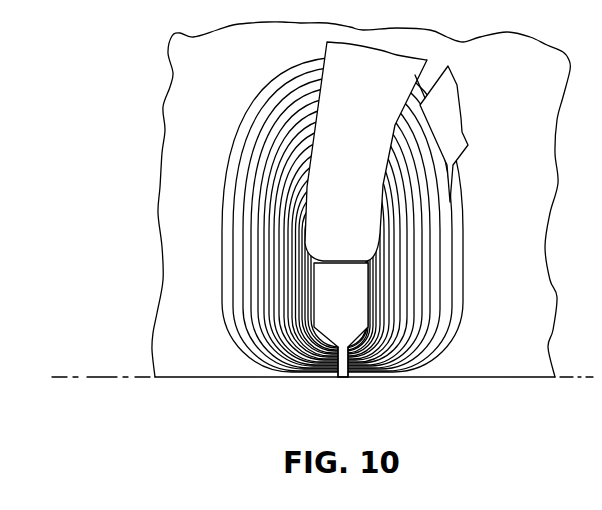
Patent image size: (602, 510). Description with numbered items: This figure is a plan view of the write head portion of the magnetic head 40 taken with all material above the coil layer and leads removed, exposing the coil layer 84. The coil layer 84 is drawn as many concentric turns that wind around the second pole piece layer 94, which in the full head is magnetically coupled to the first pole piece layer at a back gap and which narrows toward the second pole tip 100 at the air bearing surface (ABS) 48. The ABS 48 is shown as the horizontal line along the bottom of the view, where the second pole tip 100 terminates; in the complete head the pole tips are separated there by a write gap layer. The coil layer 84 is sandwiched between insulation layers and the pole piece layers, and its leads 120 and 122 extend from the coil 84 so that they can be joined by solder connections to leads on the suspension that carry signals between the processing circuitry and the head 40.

The magnetic head 40 is at (484, 196).
The air bearing surface (ABS) 48 is at (101, 376).
The coil layer 84 is at (440, 283).
The second pole piece layer 94 is at (354, 311).
The second pole tip 100 is at (343, 379).
The lead 120 is at (370, 150).
The lead 122 is at (462, 112).